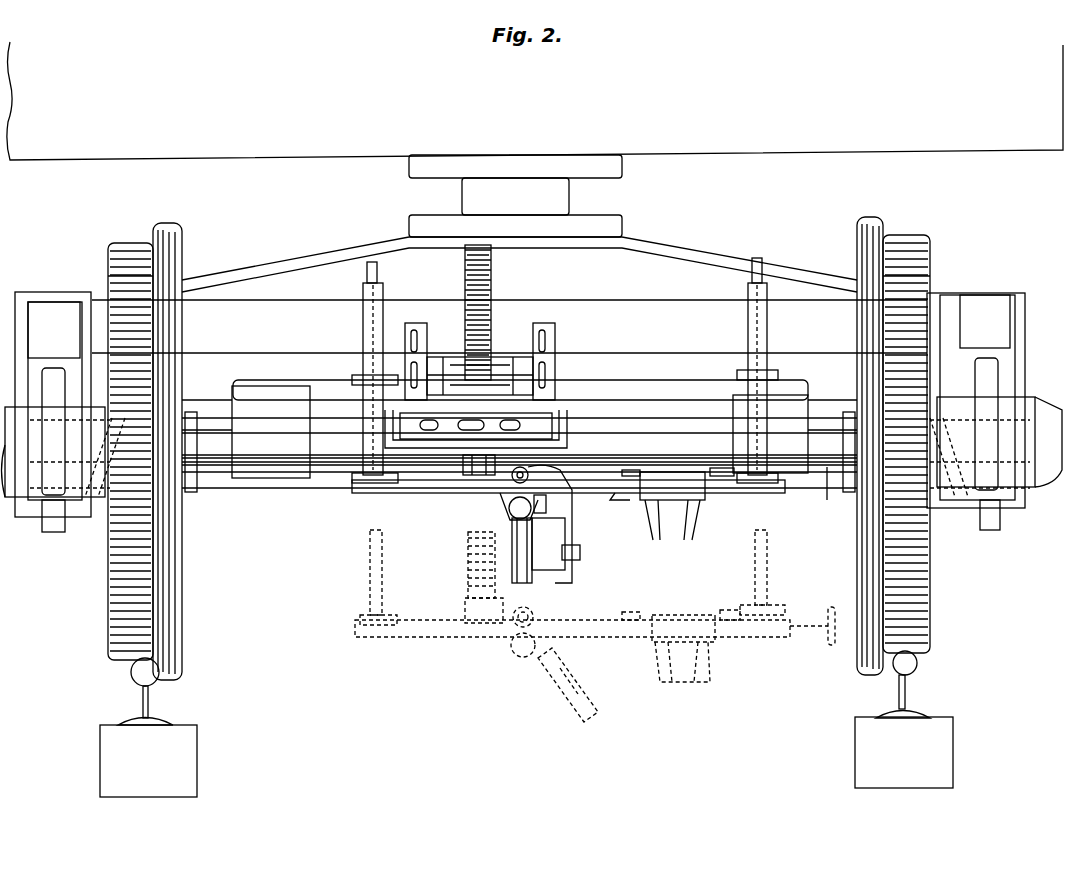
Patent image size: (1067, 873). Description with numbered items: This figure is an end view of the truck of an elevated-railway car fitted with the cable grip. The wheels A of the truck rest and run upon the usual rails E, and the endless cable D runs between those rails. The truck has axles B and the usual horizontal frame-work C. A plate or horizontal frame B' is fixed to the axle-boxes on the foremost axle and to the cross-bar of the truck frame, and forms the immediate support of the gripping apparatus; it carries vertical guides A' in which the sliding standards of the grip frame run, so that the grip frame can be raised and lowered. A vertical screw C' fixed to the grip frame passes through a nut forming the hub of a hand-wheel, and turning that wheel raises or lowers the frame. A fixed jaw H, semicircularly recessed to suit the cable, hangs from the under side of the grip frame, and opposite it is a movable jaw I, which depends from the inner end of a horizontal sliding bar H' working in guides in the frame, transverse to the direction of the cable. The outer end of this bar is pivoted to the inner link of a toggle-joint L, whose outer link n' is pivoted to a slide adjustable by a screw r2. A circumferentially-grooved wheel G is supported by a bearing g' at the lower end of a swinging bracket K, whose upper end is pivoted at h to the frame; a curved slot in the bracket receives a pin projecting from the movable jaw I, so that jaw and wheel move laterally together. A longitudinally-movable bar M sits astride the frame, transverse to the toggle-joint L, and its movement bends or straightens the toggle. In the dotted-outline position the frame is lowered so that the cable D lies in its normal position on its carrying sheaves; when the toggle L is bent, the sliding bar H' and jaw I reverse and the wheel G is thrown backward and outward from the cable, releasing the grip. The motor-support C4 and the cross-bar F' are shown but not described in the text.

The wheels A is at (528, 448).
The vertical guides A' is at (563, 383).
The axles B is at (519, 458).
The horizontal frame B' is at (520, 381).
The horizontal frame-work C is at (532, 402).
The vertical screw C' is at (492, 312).
The motor support C4 is at (685, 553).
The cable D is at (486, 520).
The rails E is at (185, 705).
The cross bar F' is at (593, 565).
The wheel G is at (554, 653).
The bearing g' is at (549, 595).
The jaw H is at (508, 505).
The sliding bar H' is at (560, 522).
The pivot h is at (520, 473).
The movable jaw I is at (543, 508).
The swinging bracket K is at (546, 548).
The toggle-joint L is at (620, 507).
The longitudinally-movable bar M is at (677, 577).
The outer link n' is at (721, 511).
The gear wheel R is at (488, 359).
The screw r2 is at (814, 487).